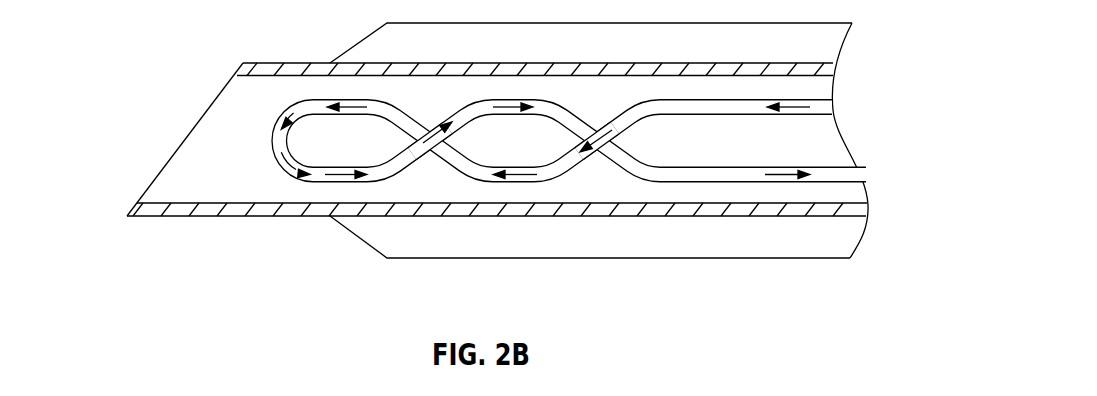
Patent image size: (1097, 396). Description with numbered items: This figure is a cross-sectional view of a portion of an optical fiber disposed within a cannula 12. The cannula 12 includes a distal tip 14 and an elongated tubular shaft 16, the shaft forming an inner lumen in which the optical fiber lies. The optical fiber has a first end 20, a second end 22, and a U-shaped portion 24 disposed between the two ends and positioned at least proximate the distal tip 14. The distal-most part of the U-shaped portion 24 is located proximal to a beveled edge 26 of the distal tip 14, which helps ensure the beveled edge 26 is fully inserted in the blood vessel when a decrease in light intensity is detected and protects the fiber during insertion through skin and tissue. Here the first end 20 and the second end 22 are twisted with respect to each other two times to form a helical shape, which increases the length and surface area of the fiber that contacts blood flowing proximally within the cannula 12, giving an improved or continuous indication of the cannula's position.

The cannula 12 is at (282, 217).
The distal tip 14 is at (125, 215).
The elongated tubular shaft 16 is at (623, 208).
The first end 20 is at (750, 107).
The second end 22 is at (742, 173).
The U-shaped portion 24 is at (272, 143).
The beveled edge 26 is at (182, 142).